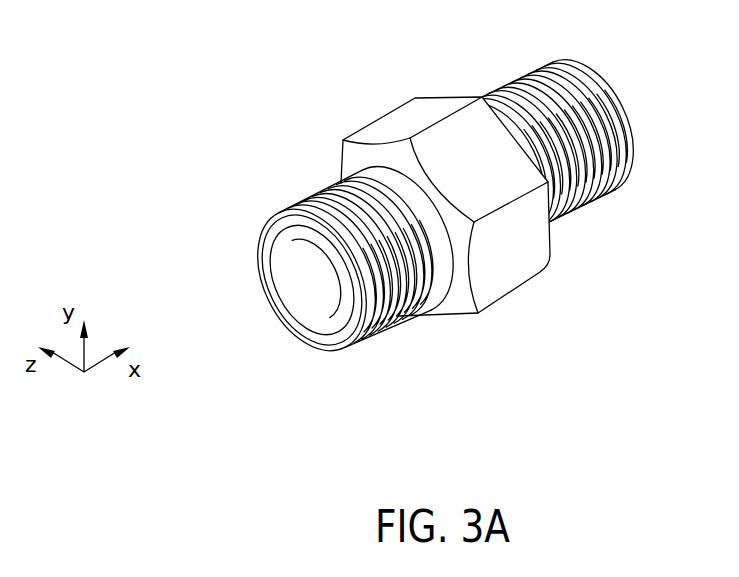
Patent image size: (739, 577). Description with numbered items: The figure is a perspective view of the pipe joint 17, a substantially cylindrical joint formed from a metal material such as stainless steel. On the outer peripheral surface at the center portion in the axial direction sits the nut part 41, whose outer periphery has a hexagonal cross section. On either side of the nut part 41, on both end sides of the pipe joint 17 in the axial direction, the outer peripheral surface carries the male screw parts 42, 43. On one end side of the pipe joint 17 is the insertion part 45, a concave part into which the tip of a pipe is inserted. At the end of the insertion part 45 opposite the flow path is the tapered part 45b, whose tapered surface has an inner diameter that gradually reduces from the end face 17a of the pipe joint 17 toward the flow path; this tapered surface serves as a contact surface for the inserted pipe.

The pipe joint 17 is at (304, 82).
The end face 17a is at (272, 232).
The nut part 41 is at (512, 257).
The male screw part 42 is at (396, 321).
The male screw part 43 is at (597, 182).
The insertion part 45 is at (315, 280).
The tapered part 45b is at (275, 255).